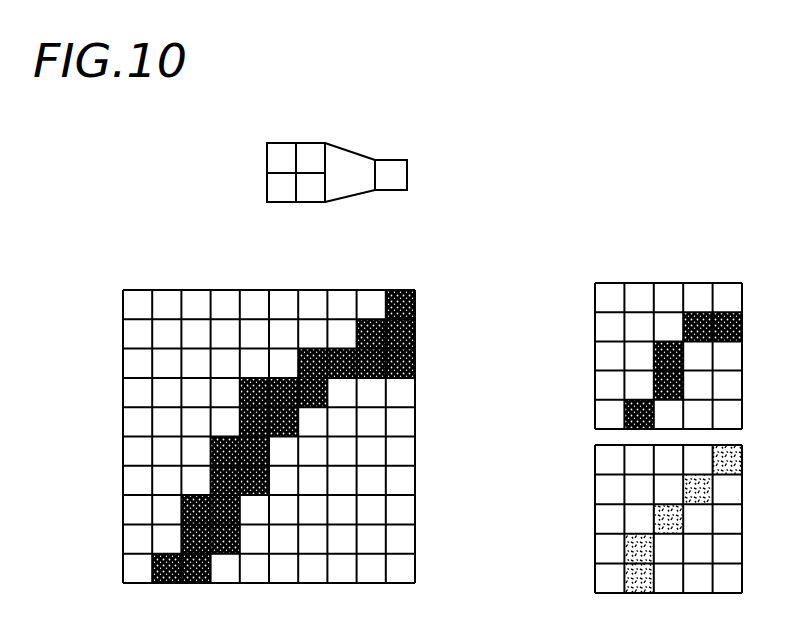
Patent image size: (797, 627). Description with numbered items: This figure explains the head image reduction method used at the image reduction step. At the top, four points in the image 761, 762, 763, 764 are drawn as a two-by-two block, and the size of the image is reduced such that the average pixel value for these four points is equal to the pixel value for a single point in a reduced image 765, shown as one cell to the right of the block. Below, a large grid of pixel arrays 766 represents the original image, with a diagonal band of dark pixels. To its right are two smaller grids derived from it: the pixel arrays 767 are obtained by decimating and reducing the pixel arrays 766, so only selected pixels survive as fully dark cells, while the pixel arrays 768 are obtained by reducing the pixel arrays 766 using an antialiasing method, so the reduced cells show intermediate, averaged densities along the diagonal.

The point in the image 761 is at (278, 143).
The point in the image 762 is at (317, 143).
The point in the image 763 is at (278, 202).
The point in the image 764 is at (317, 202).
The single point in a reduced image 765 is at (407, 175).
The pixel arrays 766 is at (415, 423).
The pixel arrays obtained by decimating and reducing 767 is at (595, 345).
The pixel arrays obtained by reducing using an antialiasing method 768 is at (595, 508).